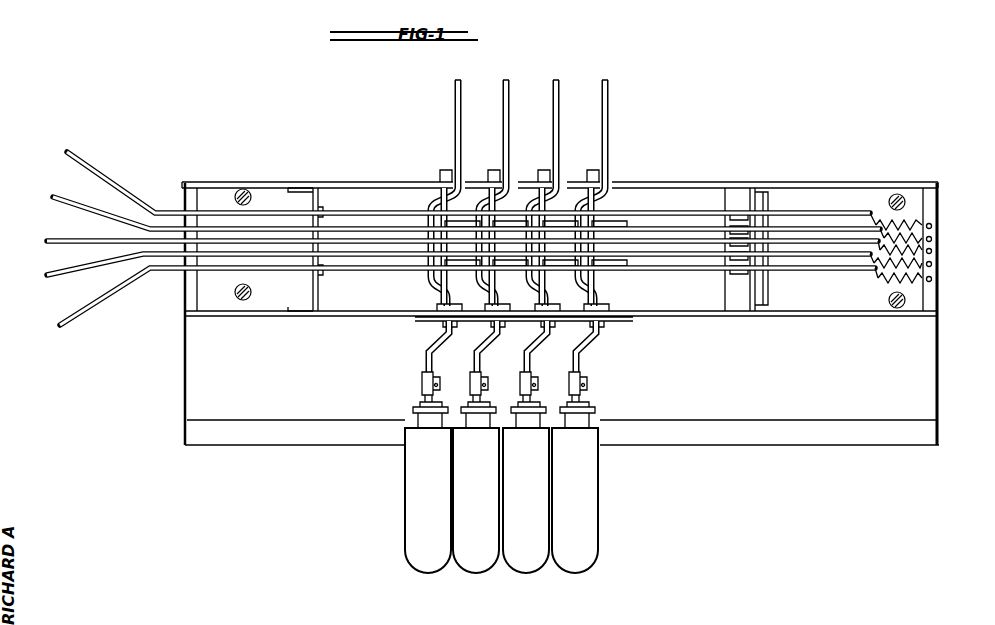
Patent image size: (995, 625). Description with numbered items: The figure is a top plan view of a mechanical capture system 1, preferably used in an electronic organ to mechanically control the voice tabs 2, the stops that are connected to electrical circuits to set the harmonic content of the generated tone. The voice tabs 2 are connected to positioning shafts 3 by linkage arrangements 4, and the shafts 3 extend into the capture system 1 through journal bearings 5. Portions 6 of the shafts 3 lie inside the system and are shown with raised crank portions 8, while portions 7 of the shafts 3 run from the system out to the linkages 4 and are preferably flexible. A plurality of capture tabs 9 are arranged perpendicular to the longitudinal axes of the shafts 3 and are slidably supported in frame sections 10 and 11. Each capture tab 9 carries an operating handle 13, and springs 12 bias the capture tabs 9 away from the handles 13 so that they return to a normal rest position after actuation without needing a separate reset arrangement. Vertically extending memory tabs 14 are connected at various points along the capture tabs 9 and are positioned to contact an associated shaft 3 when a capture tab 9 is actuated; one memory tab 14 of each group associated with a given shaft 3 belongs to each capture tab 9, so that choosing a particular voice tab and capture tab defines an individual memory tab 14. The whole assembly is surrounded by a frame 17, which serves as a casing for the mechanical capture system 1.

The mechanical capture system 1 is at (386, 323).
The voice tabs 2 is at (425, 558).
The positioning shafts 3 is at (614, 121).
The linkage arrangements 4 is at (458, 371).
The journal bearings 5 is at (478, 322).
The portions of shafts 6 is at (452, 304).
The portions of shafts 7 is at (545, 351).
The raised crank portions 8 is at (474, 205).
The capture tabs 9 is at (225, 210).
The frame section 10 is at (312, 200).
The frame section 11 is at (739, 200).
The springs 12 is at (930, 233).
The operating handles 13 is at (60, 330).
The memory tabs 14 is at (558, 237).
The frame 17 is at (265, 182).